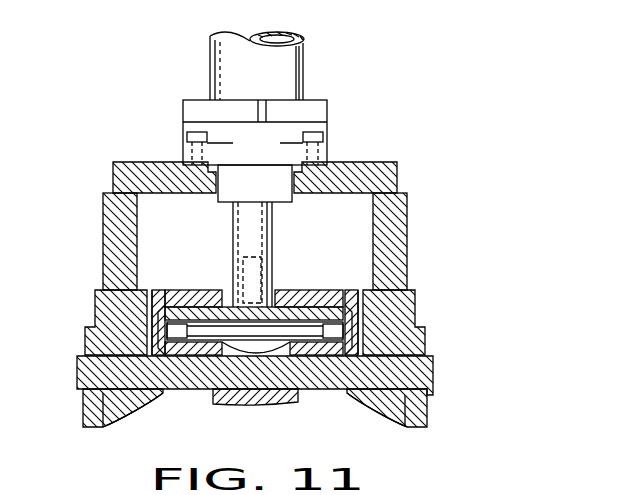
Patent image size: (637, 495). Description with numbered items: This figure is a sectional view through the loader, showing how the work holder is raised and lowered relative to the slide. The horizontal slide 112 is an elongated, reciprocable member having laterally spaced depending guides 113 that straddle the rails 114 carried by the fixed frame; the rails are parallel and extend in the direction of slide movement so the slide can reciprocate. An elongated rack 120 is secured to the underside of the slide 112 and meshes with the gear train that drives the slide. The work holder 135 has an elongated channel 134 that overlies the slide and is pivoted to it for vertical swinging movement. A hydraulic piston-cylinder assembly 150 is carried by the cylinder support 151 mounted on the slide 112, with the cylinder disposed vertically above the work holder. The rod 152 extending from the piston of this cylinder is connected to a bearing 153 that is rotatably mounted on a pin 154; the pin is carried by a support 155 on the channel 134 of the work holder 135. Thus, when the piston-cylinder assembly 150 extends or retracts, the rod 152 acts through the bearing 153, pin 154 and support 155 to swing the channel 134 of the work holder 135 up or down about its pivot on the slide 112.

The hydraulic piston-cylinder assembly 150 is at (306, 82).
The cylinder support 151 is at (408, 275).
The rod 152 is at (270, 247).
The work holder 135 is at (190, 280).
The bearing 153 is at (222, 302).
The channel 134 is at (300, 308).
The support 155 is at (180, 300).
The pin 154 is at (318, 332).
The rack 120 is at (279, 405).
The slide 112 is at (426, 385).
The guides 113 is at (95, 403).
The rails 114 is at (148, 406).